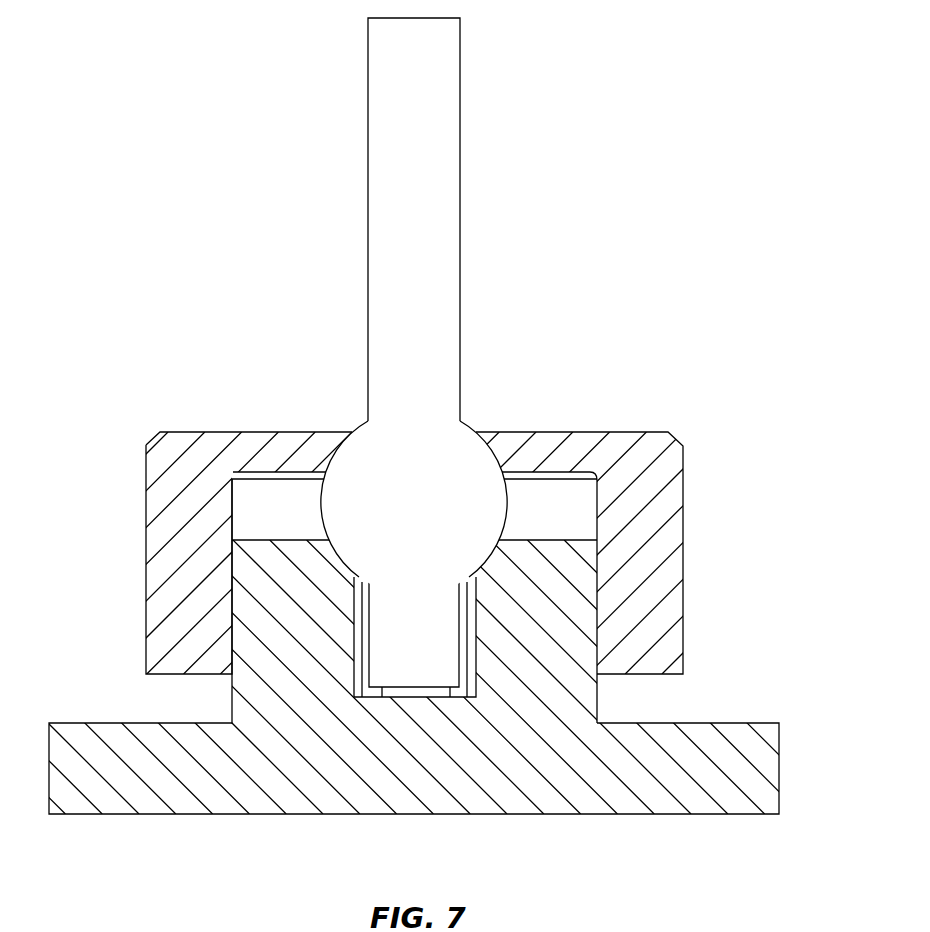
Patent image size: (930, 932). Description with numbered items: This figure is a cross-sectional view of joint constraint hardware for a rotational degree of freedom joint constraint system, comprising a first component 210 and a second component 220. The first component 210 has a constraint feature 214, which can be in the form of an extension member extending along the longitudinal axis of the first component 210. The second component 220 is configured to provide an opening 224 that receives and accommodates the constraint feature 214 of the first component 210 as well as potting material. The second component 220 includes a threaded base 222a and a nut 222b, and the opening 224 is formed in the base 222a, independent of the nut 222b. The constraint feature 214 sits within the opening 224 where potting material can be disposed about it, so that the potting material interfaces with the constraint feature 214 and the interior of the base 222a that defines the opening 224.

The first component 210 is at (533, 256).
The constraint feature 214 is at (433, 660).
The second component 220 is at (452, 623).
The threaded base 222a is at (232, 697).
The nut 222b is at (146, 556).
The opening 224 is at (379, 702).